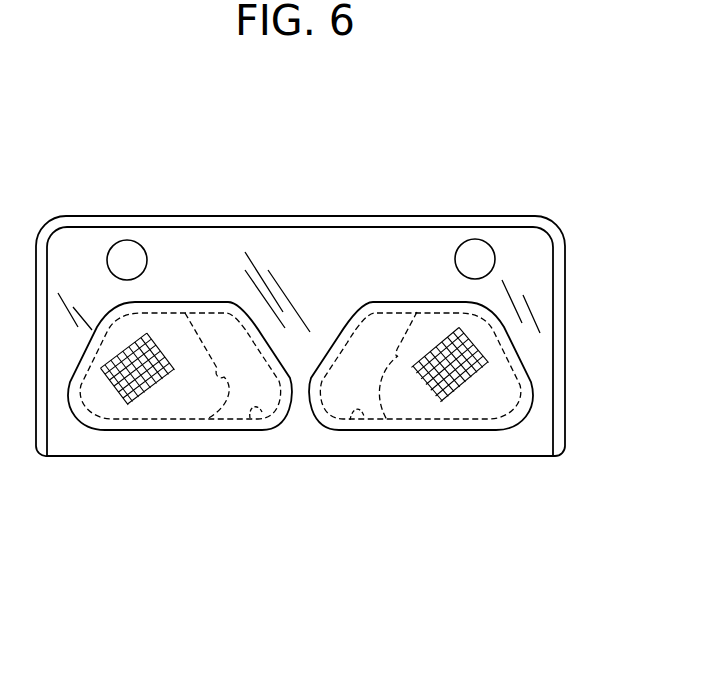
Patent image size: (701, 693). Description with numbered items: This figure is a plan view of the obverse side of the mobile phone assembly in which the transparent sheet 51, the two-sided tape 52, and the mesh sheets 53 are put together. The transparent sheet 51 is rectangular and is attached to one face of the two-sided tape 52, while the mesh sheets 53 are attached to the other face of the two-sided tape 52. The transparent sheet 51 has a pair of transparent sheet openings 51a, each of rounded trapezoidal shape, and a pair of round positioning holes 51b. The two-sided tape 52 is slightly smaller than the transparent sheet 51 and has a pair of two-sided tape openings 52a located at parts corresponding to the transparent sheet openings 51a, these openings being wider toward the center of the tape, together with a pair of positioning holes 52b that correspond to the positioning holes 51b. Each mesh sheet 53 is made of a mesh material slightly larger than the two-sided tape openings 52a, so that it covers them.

The transparent sheet 51 is at (427, 216).
The transparent sheet opening 51a is at (222, 368).
The positioning hole 51b is at (134, 241).
The two-sided tape 52 is at (271, 238).
The two-sided tape opening 52a is at (356, 414).
The positioning hole 52b is at (479, 240).
The mesh sheet 53 is at (145, 432).